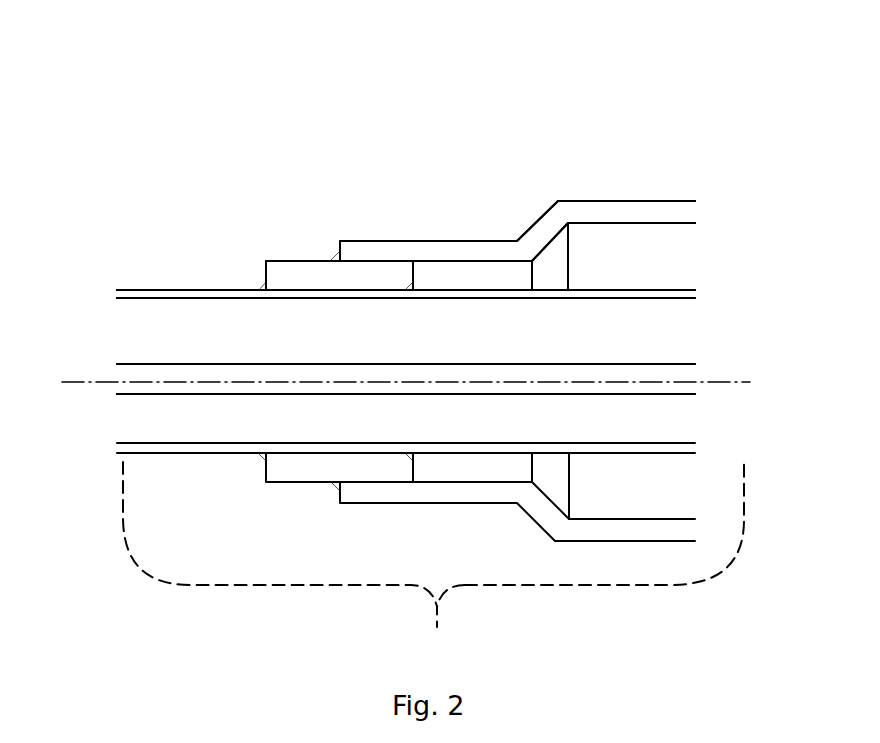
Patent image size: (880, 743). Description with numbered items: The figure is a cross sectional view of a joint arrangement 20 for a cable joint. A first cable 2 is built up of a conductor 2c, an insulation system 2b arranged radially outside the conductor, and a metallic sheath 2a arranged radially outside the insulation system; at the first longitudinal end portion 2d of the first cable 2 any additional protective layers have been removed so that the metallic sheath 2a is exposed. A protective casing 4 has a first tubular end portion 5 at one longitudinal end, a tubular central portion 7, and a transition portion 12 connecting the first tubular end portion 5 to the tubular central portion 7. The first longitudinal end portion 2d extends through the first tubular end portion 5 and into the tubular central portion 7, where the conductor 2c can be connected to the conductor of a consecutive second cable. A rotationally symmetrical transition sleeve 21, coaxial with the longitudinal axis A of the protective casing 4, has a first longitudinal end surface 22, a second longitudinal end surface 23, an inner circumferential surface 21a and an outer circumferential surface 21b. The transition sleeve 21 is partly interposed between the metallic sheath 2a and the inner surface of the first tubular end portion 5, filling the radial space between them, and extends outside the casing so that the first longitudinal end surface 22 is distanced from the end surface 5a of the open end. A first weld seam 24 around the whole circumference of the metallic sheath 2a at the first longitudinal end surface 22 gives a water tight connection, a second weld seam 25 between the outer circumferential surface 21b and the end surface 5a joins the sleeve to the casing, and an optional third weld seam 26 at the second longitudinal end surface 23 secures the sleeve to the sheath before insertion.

The first cable 2 is at (145, 453).
The metallic sheath 2a is at (183, 297).
The insulation system 2b is at (153, 325).
The conductor 2c is at (203, 372).
The first longitudinal end portion 2d is at (433, 560).
The protective casing 4 is at (571, 200).
The first tubular end portion 5 is at (433, 250).
The end surface 5a is at (340, 250).
The tubular central portion 7 is at (640, 217).
The transition portion 12 is at (547, 228).
The joint arrangement 20 is at (501, 106).
The transition sleeve 21 is at (310, 280).
The inner circumferential surface 21a is at (353, 292).
The outer circumferential surface 21b is at (283, 260).
The first longitudinal end surface 22 is at (263, 270).
The second longitudinal end surface 23 is at (415, 273).
The first weld seam 24 is at (263, 455).
The second weld seam 25 is at (330, 490).
The third weld seam 26 is at (415, 455).
The longitudinal axis A is at (93, 380).